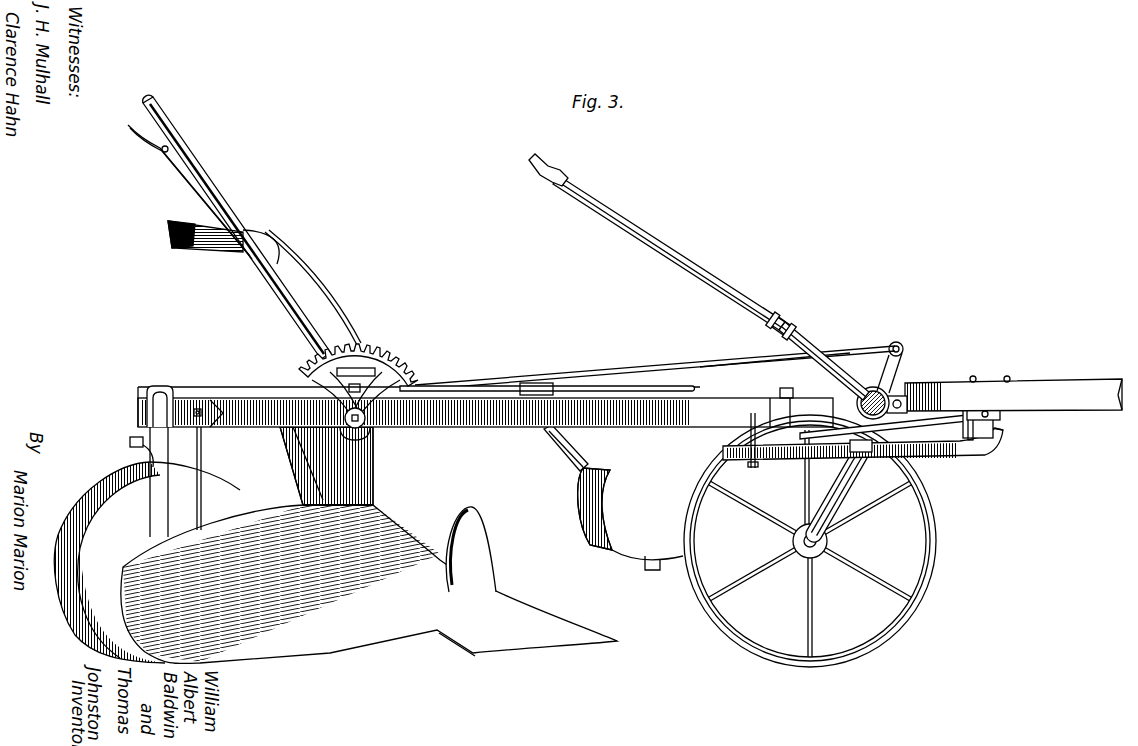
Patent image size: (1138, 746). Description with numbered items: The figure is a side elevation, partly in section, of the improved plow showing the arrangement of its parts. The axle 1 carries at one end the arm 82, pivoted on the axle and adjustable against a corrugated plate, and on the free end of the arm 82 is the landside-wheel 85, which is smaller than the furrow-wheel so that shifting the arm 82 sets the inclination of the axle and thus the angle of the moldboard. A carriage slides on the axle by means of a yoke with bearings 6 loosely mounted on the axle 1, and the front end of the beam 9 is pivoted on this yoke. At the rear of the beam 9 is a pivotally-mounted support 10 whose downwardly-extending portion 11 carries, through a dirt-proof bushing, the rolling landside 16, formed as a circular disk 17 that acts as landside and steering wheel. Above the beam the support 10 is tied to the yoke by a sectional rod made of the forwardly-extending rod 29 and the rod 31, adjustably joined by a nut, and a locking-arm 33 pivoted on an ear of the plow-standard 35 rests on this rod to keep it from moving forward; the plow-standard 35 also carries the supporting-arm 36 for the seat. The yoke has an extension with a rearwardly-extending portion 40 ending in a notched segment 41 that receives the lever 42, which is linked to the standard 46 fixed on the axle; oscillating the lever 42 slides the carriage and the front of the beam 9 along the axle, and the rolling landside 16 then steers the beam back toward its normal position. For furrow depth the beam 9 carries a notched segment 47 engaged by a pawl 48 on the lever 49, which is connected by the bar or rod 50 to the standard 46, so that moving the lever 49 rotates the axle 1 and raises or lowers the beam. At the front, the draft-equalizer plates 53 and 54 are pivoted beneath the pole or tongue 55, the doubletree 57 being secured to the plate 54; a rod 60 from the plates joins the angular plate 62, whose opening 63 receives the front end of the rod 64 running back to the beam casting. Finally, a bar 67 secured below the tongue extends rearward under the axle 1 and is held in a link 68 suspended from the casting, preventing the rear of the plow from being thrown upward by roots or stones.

The axle 1 is at (873, 387).
The bearings 6 is at (897, 413).
The beam 9 is at (638, 427).
The support 10 is at (147, 390).
The downwardly-extending portion 11 is at (153, 467).
The rolling landside 16 is at (84, 491).
The circular disk 17 is at (93, 562).
The forwardly-extending rod 29 is at (241, 394).
The rod 31 is at (583, 385).
The locking-arm 33 is at (378, 378).
The plow-standard 35 is at (370, 484).
The supporting-arm 36 is at (327, 282).
The rearwardly-extending portion 40 is at (832, 356).
The notched segment 41 is at (793, 356).
The lever 42 is at (657, 242).
The standard 46 is at (901, 375).
The notched segment 47 is at (298, 372).
The pawl 48 is at (340, 343).
The lever 49 is at (260, 283).
The bar or rod 50 is at (355, 386).
The plate 53 is at (983, 438).
The plate 54 is at (980, 407).
The pole or tongue 55 is at (1060, 384).
The doubletree 57 is at (270, 232).
The rod 60 is at (926, 423).
The angular plate 62 is at (863, 453).
The opening 63 is at (1003, 415).
The rod 64 is at (843, 437).
The bar 67 is at (924, 457).
The link 68 is at (766, 459).
The arm 82 is at (836, 516).
The landside-wheel 85 is at (693, 511).